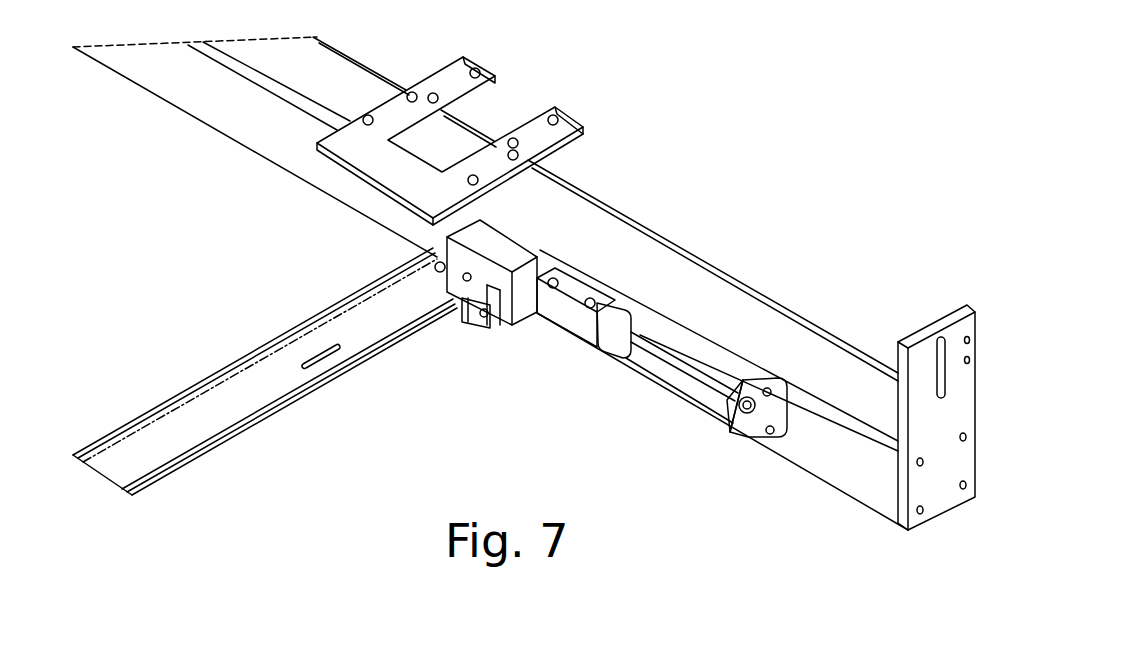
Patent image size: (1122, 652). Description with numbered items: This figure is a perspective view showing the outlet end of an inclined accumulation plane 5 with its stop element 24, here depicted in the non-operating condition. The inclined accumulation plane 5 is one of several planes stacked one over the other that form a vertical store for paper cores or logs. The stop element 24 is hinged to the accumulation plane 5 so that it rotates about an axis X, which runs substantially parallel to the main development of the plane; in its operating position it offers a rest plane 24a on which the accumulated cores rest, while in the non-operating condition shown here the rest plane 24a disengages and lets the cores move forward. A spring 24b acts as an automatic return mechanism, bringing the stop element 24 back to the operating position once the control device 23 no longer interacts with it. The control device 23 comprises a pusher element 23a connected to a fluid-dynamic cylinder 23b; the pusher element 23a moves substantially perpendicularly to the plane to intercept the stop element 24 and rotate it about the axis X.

The inclined accumulation plane 5 is at (367, 335).
The stop element 24 is at (485, 231).
The rest plane 24a is at (502, 305).
The spring 24b is at (440, 243).
The control device 23 is at (577, 311).
The pusher element 23a is at (548, 282).
The fluid-dynamic cylinder 23b is at (712, 393).
The axis X is at (553, 256).